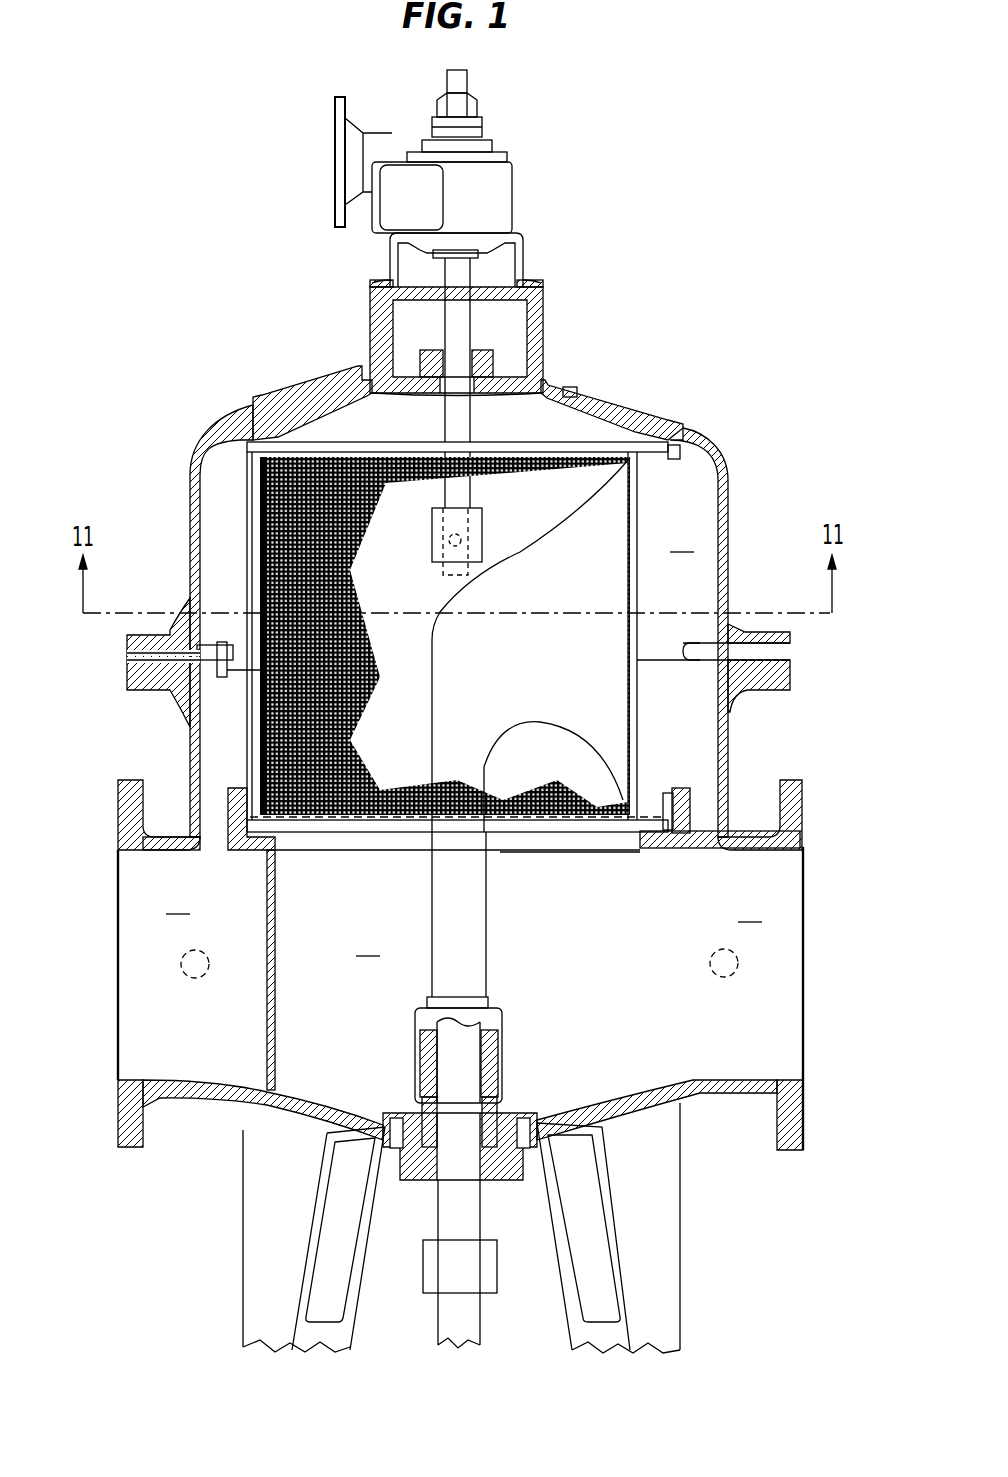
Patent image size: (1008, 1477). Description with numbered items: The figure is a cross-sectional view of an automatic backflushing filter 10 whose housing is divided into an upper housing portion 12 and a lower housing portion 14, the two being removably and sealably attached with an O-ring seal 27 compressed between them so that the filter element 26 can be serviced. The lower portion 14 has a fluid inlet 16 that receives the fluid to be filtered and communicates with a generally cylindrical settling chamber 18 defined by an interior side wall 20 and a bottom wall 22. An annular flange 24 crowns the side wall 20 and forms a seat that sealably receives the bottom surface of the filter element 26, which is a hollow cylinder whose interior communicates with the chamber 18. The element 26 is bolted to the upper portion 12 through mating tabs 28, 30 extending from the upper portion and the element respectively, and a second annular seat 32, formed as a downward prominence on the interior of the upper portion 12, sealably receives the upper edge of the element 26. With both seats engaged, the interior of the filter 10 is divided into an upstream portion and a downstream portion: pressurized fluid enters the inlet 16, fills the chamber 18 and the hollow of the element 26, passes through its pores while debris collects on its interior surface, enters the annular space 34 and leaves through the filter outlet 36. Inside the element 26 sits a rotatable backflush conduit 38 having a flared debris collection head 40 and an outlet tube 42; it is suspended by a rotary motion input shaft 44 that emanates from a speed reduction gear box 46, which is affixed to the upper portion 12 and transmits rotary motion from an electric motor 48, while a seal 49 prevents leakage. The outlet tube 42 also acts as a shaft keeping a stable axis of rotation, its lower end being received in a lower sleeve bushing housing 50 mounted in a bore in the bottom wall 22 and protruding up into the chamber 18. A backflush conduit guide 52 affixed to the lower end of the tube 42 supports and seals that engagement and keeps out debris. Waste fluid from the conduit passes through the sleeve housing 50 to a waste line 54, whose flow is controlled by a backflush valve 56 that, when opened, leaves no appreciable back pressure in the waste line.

The automatic backflushing filter 10 is at (787, 412).
The upper housing portion 12 is at (727, 494).
The lower housing portion 14 is at (729, 747).
The fluid inlet 16 is at (736, 935).
The settling chamber 18 is at (498, 904).
The interior side wall 20 is at (272, 1000).
The bottom wall 22 is at (667, 1107).
The annular flange 24 is at (690, 800).
The filter element 26 is at (249, 527).
The O-ring seal 27 is at (752, 700).
The mating tab 28 is at (215, 647).
The mating tab 30 is at (233, 677).
The second annular seat 32 is at (673, 427).
The annular space 34 is at (682, 538).
The filter outlet 36 is at (187, 931).
The backflush conduit 38 is at (577, 531).
The debris collection head 40 is at (553, 732).
The outlet tube 42 is at (488, 908).
The rotary motion input shaft 44 is at (437, 418).
The speed reduction gear box 46 is at (497, 193).
The electric motor 48 is at (385, 143).
The seal 49 is at (477, 345).
The lower sleeve bushing housing 50 is at (437, 1180).
The backflush conduit guide 52 is at (502, 1065).
The waste line 54 is at (437, 1210).
The backflush valve 56 is at (497, 1253).